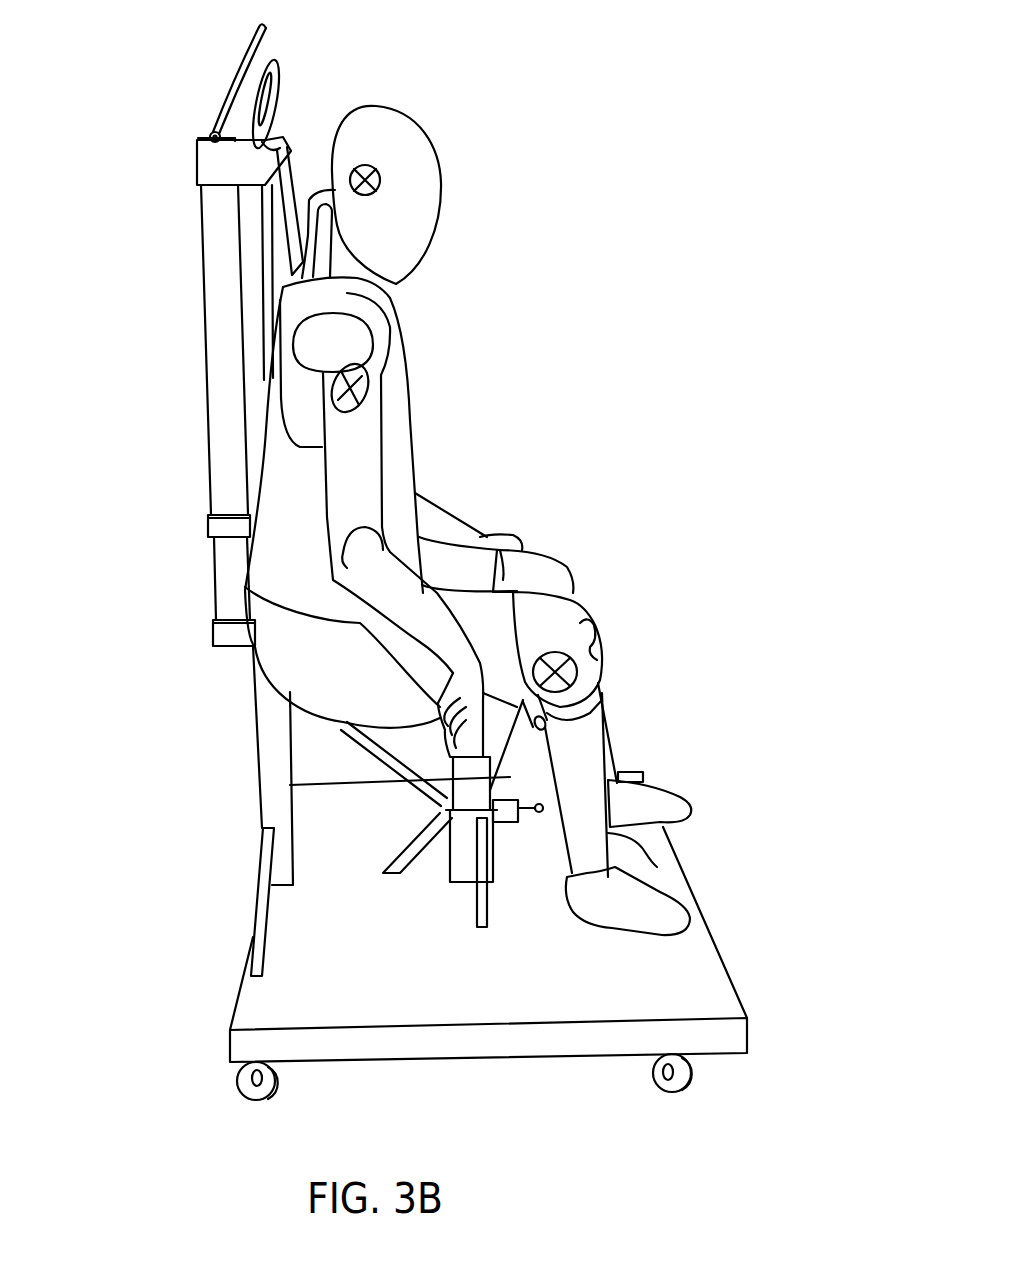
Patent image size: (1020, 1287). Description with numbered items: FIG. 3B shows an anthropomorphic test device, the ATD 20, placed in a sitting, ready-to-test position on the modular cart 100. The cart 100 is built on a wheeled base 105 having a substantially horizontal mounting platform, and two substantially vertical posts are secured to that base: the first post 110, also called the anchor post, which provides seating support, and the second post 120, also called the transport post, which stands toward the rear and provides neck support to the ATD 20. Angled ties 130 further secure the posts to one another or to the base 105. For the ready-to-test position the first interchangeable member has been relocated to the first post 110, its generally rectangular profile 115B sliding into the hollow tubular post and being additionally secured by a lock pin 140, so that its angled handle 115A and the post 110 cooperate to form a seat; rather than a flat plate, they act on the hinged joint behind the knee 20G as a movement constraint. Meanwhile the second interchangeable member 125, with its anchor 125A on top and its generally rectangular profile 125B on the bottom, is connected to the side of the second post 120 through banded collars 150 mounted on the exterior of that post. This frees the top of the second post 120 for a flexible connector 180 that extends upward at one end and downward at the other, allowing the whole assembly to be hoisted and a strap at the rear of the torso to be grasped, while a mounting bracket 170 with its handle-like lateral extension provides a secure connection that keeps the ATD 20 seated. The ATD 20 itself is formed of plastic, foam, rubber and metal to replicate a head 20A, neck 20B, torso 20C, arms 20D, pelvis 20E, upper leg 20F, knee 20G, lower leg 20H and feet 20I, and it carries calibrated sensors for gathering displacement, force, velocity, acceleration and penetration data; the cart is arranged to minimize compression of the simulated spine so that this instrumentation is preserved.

The modular cart 100 is at (657, 212).
The wheeled base 105 is at (417, 1015).
The first post 110 is at (452, 885).
The handle 115A is at (573, 714).
The generally rectangular profile 115B is at (480, 787).
The second post 120 is at (250, 332).
The second interchangeable member 125 is at (200, 283).
The anchor 125A is at (197, 163).
The generally rectangular profile 125B is at (215, 577).
The angled ties 130 is at (418, 792).
The lock pin 140 is at (513, 823).
The banded collars 150 is at (210, 525).
The mounting bracket 170 is at (290, 197).
The flexible connector 180 is at (273, 83).
The ATD 20 is at (478, 140).
The head 20A is at (427, 227).
The neck 20B is at (405, 282).
The torso 20C is at (413, 428).
The arms 20D is at (278, 533).
The pelvis 20E is at (310, 687).
The upper leg 20F is at (590, 617).
The knee 20G is at (607, 645).
The lower leg 20H is at (653, 867).
The feet 20I is at (690, 921).